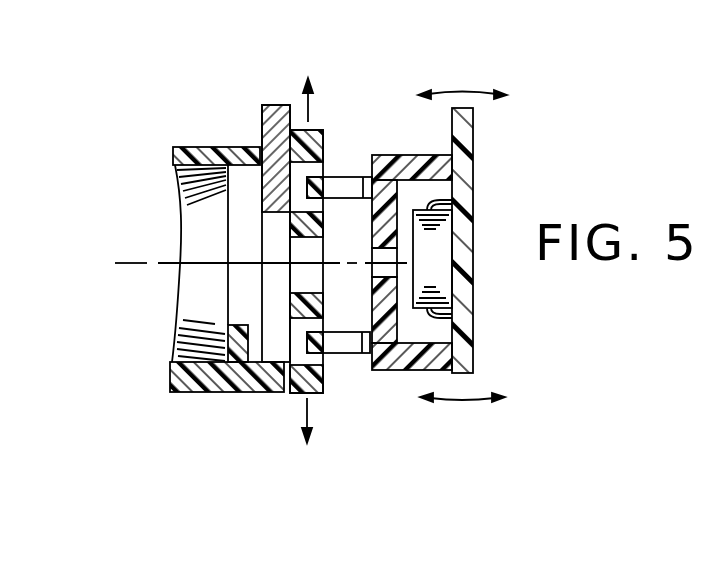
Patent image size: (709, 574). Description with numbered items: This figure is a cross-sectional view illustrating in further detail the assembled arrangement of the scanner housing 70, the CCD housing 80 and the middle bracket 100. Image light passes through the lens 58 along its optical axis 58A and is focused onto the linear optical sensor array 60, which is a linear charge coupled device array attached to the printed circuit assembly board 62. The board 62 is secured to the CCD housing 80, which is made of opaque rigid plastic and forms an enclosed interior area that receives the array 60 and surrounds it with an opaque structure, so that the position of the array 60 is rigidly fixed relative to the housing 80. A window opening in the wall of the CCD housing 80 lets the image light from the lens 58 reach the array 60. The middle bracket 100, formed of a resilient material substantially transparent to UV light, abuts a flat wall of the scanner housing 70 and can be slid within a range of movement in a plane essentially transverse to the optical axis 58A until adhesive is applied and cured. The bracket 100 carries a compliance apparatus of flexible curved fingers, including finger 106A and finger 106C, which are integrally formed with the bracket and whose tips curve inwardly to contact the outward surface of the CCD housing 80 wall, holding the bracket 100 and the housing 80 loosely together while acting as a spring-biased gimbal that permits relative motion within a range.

The lens 58 is at (183, 218).
The optical axis 58A is at (133, 265).
The scanner housing 70 is at (197, 392).
The middle bracket 100 is at (287, 393).
The flexible curved finger 106A is at (348, 183).
The flexible curved finger 106C is at (342, 350).
The CCD housing 80 is at (418, 155).
The linear optical sensor array 60 is at (437, 235).
The printed circuit assembly board 62 is at (472, 337).